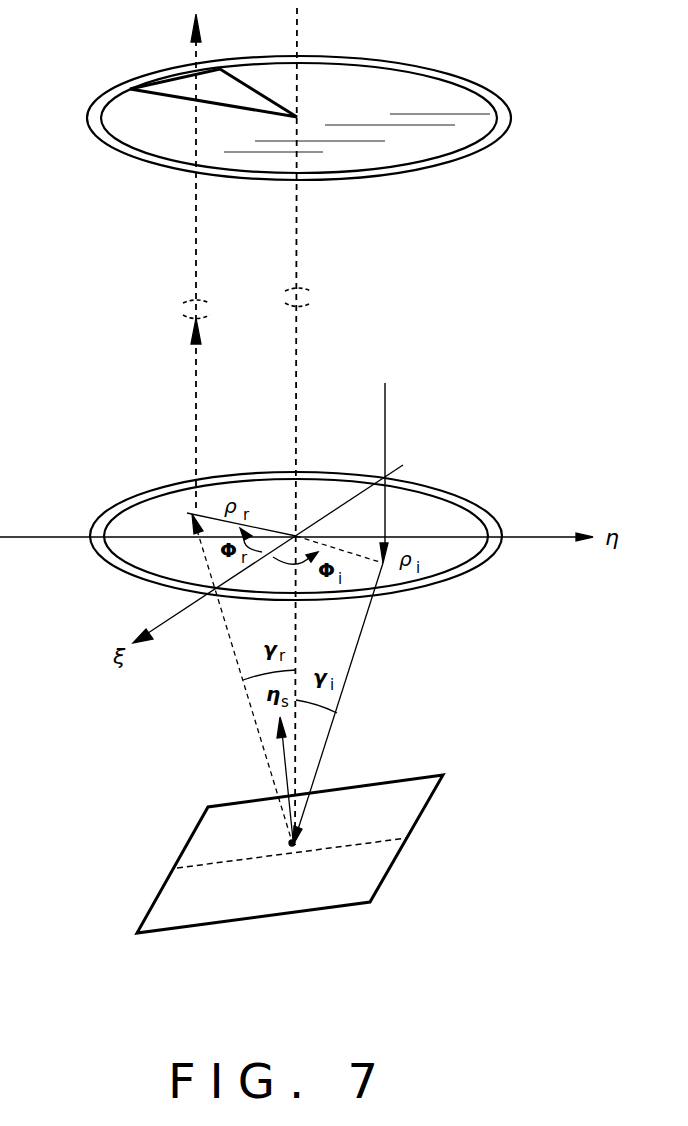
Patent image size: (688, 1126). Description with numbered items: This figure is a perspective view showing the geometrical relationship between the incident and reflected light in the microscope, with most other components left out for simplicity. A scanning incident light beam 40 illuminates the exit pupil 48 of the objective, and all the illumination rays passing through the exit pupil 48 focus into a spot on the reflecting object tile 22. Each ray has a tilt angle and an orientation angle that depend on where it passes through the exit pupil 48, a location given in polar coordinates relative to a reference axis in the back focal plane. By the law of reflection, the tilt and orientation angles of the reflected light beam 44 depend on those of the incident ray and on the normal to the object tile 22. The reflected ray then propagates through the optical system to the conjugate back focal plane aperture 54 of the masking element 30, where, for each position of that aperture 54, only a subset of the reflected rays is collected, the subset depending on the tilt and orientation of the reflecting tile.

The object tile 22 is at (392, 872).
The masking element 30 is at (110, 145).
The incident light beam 40 is at (385, 413).
The reflected light beam 44 is at (193, 407).
The exit pupil 48 is at (450, 486).
The conjugate back focal plane aperture 54 is at (170, 74).